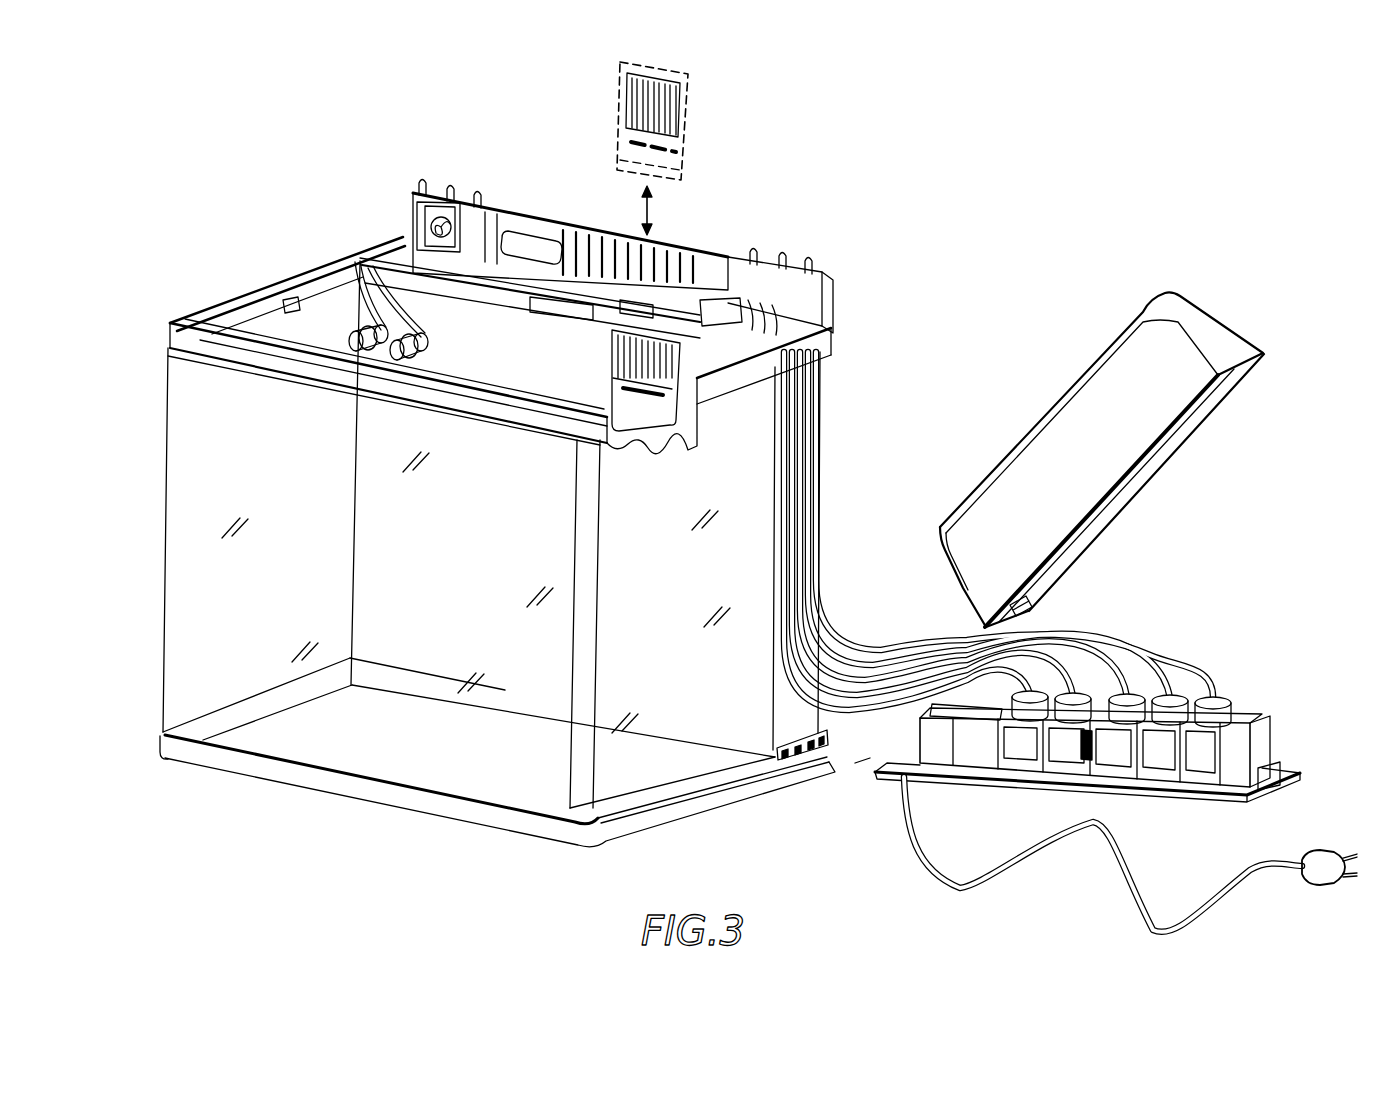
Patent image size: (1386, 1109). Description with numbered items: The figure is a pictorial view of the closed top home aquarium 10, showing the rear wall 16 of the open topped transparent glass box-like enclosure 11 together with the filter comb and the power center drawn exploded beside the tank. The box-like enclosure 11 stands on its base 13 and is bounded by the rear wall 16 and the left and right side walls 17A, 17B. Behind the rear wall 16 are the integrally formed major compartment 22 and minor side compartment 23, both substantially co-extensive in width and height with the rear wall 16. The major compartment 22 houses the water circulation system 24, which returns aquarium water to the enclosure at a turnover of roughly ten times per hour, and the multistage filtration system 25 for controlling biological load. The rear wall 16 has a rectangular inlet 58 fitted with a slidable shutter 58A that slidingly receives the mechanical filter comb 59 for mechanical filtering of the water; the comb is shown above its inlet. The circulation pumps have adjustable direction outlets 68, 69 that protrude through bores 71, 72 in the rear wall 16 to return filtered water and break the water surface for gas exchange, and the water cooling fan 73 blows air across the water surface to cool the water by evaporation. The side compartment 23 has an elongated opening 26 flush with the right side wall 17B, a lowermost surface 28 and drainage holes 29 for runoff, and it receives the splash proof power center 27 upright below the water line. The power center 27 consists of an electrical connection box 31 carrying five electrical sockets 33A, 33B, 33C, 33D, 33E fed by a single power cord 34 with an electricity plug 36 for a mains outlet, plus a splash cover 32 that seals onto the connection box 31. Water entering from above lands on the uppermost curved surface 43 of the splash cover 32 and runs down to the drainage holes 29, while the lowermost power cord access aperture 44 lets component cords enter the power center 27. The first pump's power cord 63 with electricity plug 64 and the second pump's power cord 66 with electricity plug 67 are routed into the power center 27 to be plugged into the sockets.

The closed top home aquarium 10 is at (818, 138).
The box-like enclosure 11 is at (233, 653).
The base 13 is at (498, 772).
The rear wall 16 is at (523, 333).
The left side wall 17A is at (205, 565).
The right side wall 17B is at (692, 667).
The major compartment 22 is at (476, 190).
The minor side compartment 23 is at (788, 247).
The water circulation system 24 is at (358, 213).
The multistage filtration system 25 is at (247, 118).
The elongated opening 26 is at (817, 460).
The splash proof power center 27 is at (1203, 263).
The lowermost surface 28 is at (813, 683).
The drainage holes 29 is at (803, 752).
The electrical connection box 31 is at (1177, 790).
The splash cover 32 is at (1103, 447).
The electrical socket 33A is at (1207, 753).
The electrical socket 33B is at (1170, 745).
The electrical socket 33C is at (1118, 753).
The electrical socket 33D is at (1072, 748).
The electrical socket 33E is at (1020, 747).
The single power cord 34 is at (1013, 863).
The electricity plug 36 is at (1327, 875).
The uppermost curved surface 43 is at (1208, 323).
The power cord access aperture 44 is at (1007, 620).
The rectangular inlet 58 is at (688, 122).
The slidable shutter 58A is at (667, 175).
The mechanical filter comb 59 is at (640, 108).
The power cord 63 is at (858, 766).
The electricity plug 64 is at (897, 785).
The power cord 66 is at (1063, 672).
The electricity plug 67 is at (1107, 673).
The adjustable direction outlet 68 is at (353, 338).
The adjustable direction outlet 69 is at (392, 342).
The bore 71 is at (297, 268).
The bore 72 is at (363, 258).
The water cooling fan 73 is at (438, 225).